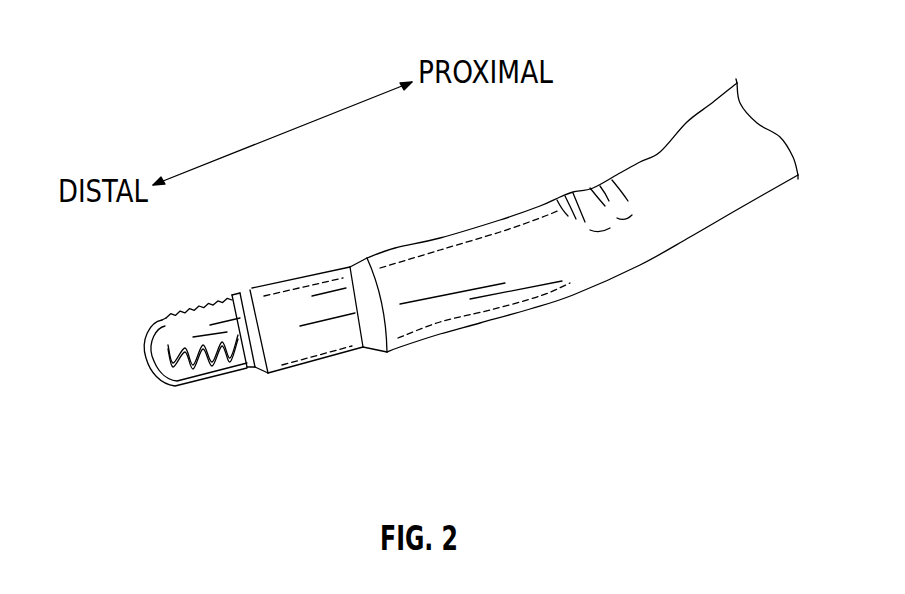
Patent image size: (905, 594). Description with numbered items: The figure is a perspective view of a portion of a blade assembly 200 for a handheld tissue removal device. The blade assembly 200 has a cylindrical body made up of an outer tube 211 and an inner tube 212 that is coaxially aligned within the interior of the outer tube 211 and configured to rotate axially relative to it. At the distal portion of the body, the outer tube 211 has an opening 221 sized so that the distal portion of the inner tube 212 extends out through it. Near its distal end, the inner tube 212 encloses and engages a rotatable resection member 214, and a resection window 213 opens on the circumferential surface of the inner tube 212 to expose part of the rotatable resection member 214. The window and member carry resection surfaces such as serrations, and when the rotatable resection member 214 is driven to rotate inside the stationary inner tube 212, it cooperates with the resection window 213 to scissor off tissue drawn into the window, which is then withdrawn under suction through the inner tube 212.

The blade assembly 200 is at (125, 77).
The outer tube 211 is at (573, 295).
The inner tube 212 is at (150, 355).
The resection window 213 is at (173, 350).
The rotatable resection member 214 is at (210, 363).
The opening 221 is at (248, 368).